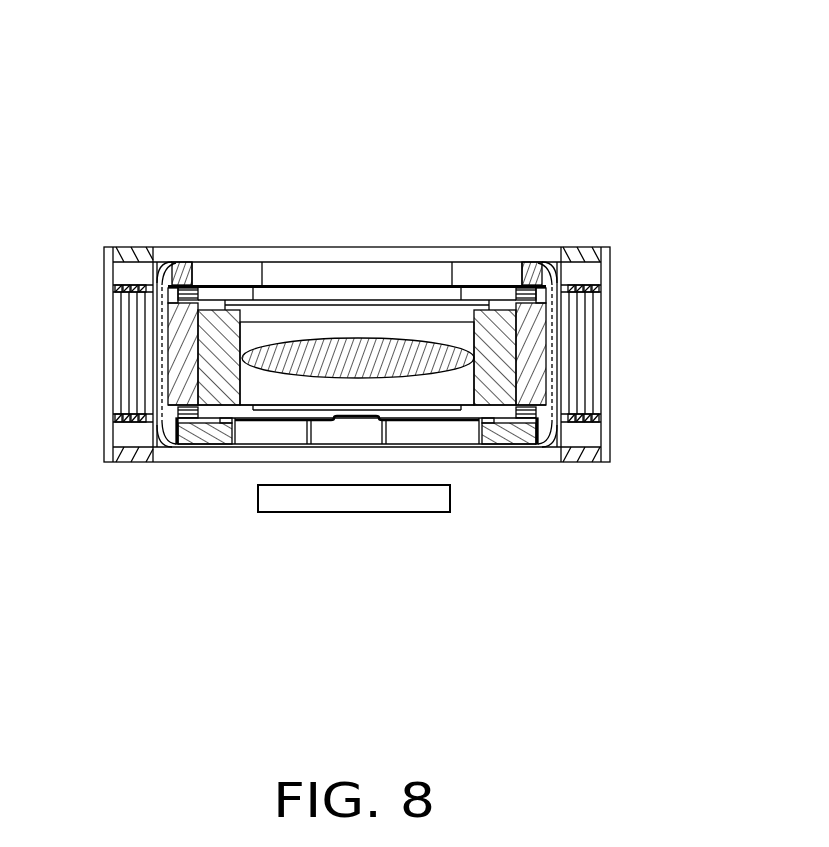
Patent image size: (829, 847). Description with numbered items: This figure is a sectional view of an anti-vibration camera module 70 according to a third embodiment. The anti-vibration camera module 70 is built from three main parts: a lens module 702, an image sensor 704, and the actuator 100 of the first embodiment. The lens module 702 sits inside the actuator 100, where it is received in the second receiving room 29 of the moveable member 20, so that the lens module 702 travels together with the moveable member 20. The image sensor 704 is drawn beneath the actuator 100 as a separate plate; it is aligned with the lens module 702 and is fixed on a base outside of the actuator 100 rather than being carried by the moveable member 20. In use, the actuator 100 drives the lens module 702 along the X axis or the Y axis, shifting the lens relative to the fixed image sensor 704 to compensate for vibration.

The anti-vibration camera module 70 is at (283, 61).
The actuator 100 is at (110, 275).
The second receiving room 29 is at (478, 270).
The moveable member 20 is at (530, 355).
The lens module 702 is at (215, 357).
The image sensor 704 is at (412, 500).